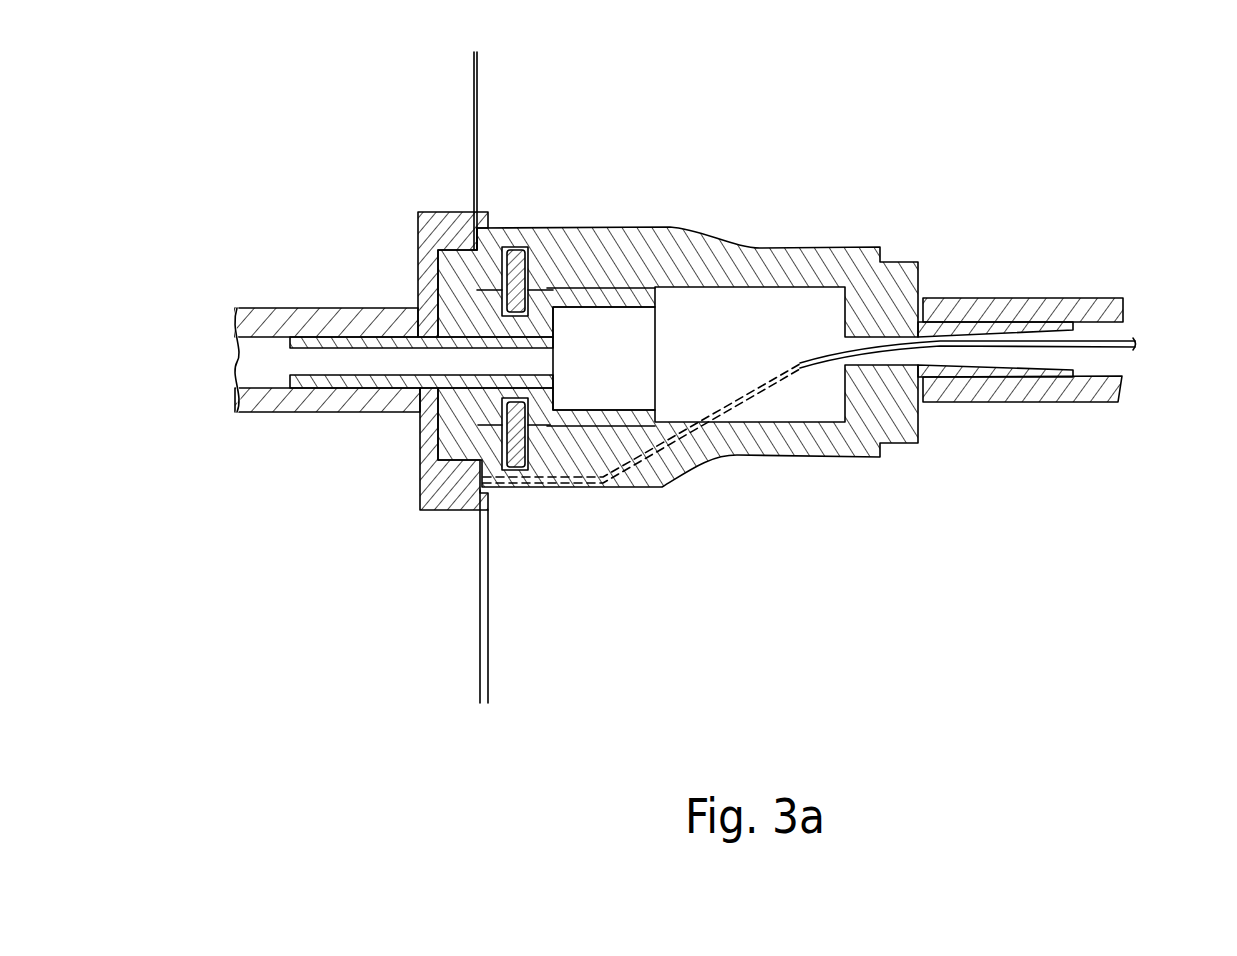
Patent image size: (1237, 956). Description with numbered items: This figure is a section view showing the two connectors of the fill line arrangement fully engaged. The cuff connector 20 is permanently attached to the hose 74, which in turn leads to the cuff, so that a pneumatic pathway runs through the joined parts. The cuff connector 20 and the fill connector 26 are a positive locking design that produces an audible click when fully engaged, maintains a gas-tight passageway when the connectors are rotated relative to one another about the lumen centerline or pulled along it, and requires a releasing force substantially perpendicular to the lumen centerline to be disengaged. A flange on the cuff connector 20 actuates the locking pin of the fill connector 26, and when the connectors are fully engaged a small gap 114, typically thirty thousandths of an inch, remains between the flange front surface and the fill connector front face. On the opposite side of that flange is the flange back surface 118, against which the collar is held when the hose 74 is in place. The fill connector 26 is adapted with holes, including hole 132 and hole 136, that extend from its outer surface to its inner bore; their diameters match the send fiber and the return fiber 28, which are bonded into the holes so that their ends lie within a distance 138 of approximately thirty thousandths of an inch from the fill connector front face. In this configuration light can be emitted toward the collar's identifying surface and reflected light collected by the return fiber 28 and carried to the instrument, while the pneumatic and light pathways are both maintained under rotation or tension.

The cuff connector 20 is at (655, 337).
The fill connector 26 is at (747, 513).
The return fiber 28 is at (1085, 352).
The hose 74 is at (250, 307).
The gap 114 is at (489, 77).
The flange back surface 118 is at (426, 261).
The hole 132 is at (557, 487).
The hole 136 is at (797, 370).
The distance 138 is at (500, 695).